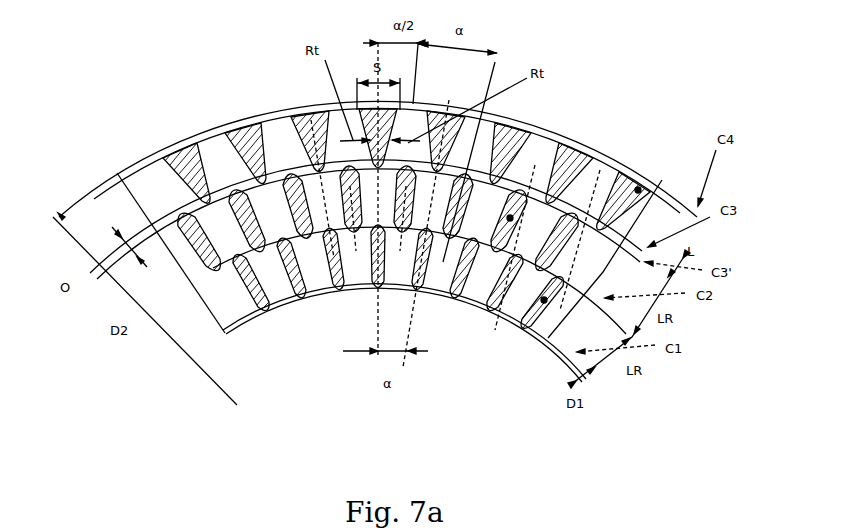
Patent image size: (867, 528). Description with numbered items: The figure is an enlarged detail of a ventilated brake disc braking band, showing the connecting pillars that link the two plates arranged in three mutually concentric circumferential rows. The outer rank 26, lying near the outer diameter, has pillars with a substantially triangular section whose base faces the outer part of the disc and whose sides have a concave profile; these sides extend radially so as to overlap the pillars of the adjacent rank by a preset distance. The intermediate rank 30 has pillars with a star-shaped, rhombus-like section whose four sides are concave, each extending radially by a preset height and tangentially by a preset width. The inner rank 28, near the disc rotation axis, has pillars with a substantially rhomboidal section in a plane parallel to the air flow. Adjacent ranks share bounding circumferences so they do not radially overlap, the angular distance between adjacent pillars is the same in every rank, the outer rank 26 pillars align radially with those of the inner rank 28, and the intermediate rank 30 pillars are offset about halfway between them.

The outer rank 26 is at (655, 183).
The inner rank 28 is at (545, 292).
The intermediate rank 30 is at (498, 180).